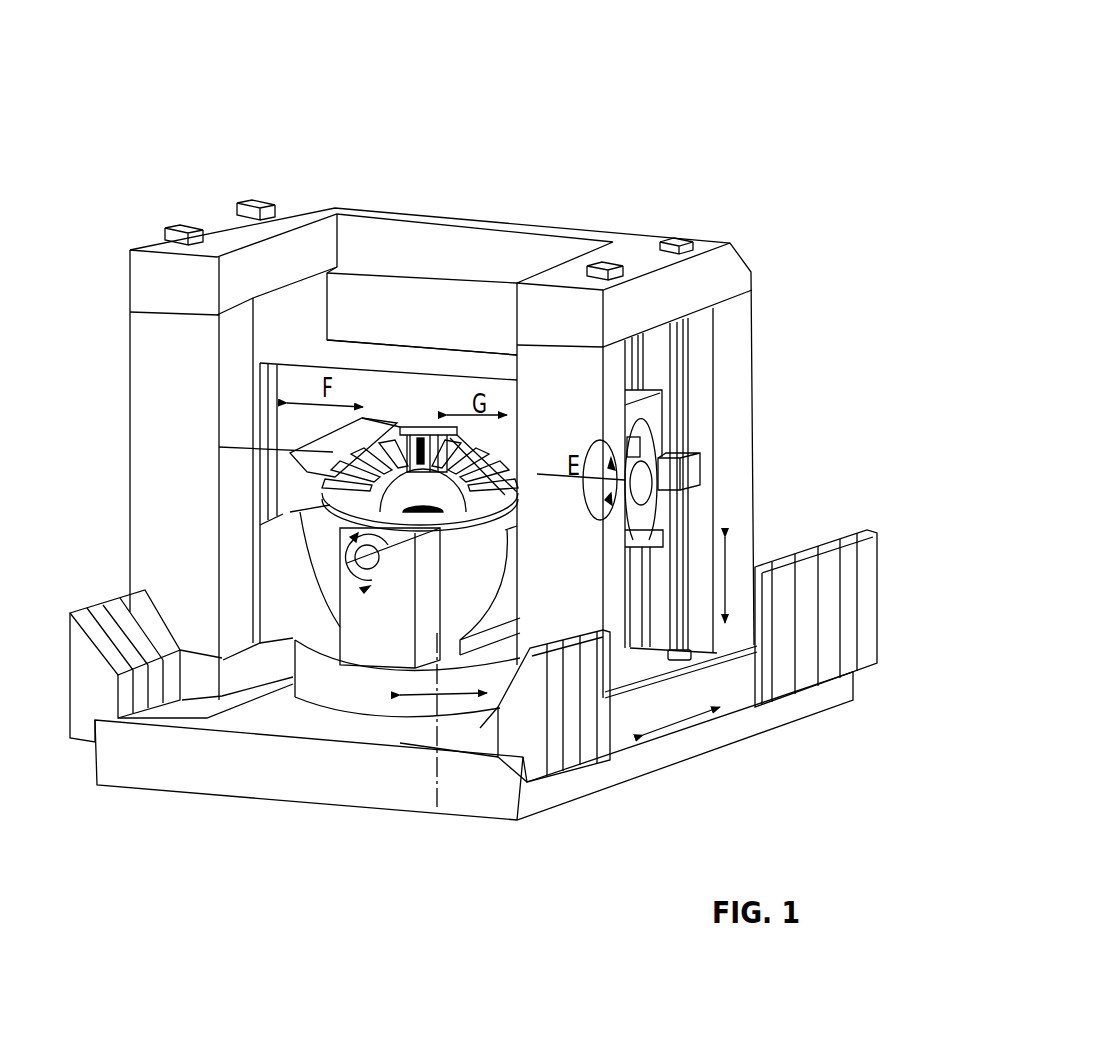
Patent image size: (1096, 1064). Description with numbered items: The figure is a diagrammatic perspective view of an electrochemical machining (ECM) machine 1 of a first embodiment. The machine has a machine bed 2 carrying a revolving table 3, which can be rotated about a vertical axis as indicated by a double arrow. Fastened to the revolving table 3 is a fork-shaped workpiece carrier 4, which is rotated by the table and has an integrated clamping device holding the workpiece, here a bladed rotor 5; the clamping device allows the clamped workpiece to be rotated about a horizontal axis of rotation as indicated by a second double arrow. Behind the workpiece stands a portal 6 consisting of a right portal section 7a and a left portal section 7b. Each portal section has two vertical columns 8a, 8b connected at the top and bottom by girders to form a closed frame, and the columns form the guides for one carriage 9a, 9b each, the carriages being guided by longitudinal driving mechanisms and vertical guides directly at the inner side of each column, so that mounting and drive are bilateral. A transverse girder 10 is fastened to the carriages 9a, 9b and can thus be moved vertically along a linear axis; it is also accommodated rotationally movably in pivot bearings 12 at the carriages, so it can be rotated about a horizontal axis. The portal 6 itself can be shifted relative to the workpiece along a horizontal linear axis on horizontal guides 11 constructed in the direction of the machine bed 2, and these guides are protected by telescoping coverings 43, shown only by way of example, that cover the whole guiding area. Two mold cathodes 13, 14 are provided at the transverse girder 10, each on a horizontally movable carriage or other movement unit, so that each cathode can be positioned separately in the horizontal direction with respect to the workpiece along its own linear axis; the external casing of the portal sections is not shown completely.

The ECM machine 1 is at (687, 88).
The machine bed 2 is at (125, 773).
The revolving table 3 is at (357, 700).
The workpiece carrier 4 is at (363, 610).
The bladed rotor 5 is at (450, 497).
The portal 6 is at (765, 310).
The right portal section 7a is at (755, 362).
The left portal section 7b is at (128, 342).
The vertical column 8a is at (735, 468).
The vertical column 8b is at (143, 442).
The carriage 9a is at (645, 415).
The carriage 9b is at (260, 397).
The transverse girder 10 is at (430, 355).
The horizontal guides 11 is at (722, 728).
The pivot bearings 12 is at (647, 508).
The mold cathode 13 is at (377, 443).
The mold cathode 14 is at (470, 443).
The coverings 43 is at (855, 595).